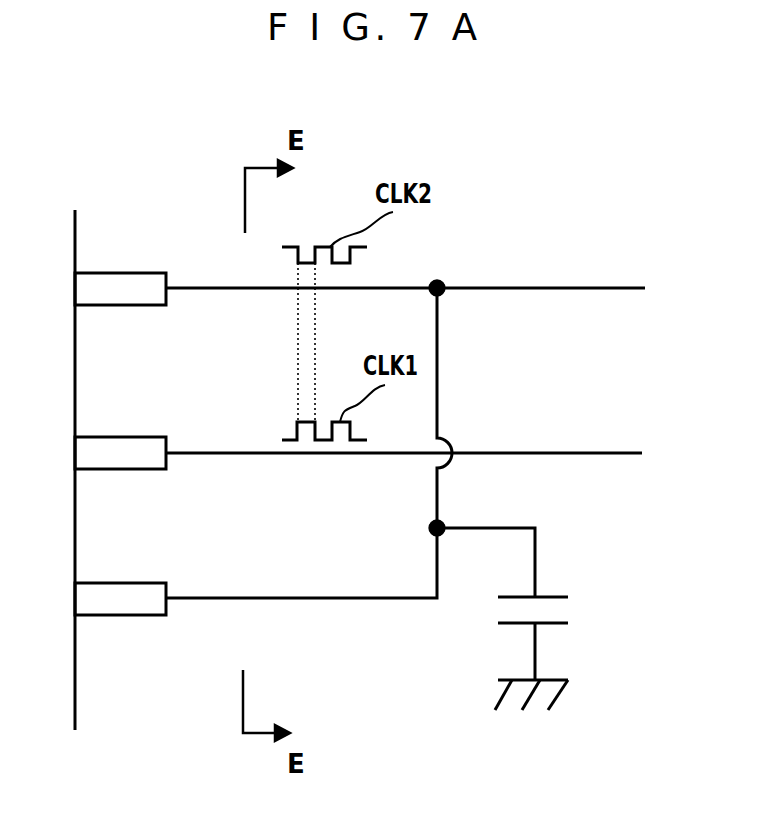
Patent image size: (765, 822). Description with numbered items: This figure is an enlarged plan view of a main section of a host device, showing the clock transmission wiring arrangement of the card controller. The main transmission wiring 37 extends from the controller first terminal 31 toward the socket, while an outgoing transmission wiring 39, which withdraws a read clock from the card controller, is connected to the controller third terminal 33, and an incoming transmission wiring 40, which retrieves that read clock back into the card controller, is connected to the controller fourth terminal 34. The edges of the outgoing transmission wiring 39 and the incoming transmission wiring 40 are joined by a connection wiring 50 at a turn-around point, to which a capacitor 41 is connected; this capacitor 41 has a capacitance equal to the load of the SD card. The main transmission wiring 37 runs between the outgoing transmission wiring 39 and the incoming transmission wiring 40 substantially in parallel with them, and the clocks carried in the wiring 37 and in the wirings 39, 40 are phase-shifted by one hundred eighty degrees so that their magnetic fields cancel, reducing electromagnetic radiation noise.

The controller first terminal 31 is at (110, 437).
The controller third terminal 33 is at (127, 273).
The controller fourth terminal 34 is at (118, 583).
The main transmission wiring 37 is at (477, 288).
The outgoing transmission wiring 39 is at (573, 453).
The incoming transmission wiring 40 is at (288, 600).
The capacitor 41 is at (555, 597).
The connection wiring 50 is at (445, 523).